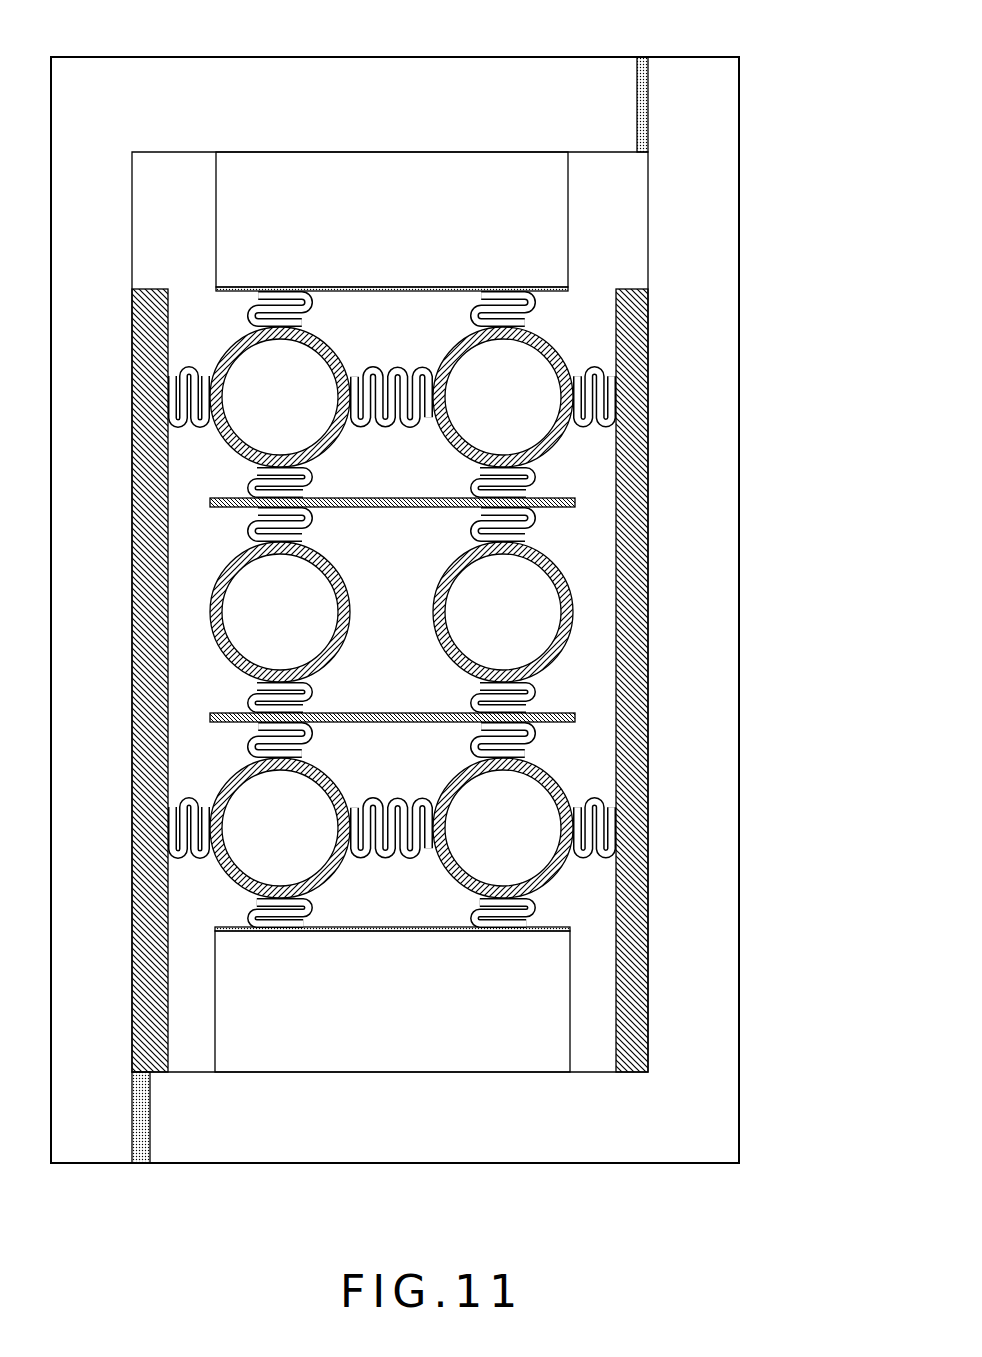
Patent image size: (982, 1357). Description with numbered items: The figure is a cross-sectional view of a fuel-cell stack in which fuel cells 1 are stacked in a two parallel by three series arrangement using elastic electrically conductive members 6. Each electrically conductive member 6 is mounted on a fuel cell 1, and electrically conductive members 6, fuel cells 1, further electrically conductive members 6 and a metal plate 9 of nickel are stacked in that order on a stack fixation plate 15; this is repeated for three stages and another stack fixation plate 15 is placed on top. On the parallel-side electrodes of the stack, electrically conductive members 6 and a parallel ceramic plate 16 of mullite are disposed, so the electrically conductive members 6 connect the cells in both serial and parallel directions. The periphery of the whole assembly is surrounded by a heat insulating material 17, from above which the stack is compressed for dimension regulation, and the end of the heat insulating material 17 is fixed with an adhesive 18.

The fuel cell 1 is at (446, 337).
The electrically conductive member 6 is at (593, 350).
The metal plate 9 is at (359, 720).
The stack fixation plate 15 is at (598, 223).
The parallel ceramic plate 16 is at (636, 440).
The heat insulating material 17 is at (278, 90).
The adhesive 18 is at (642, 93).